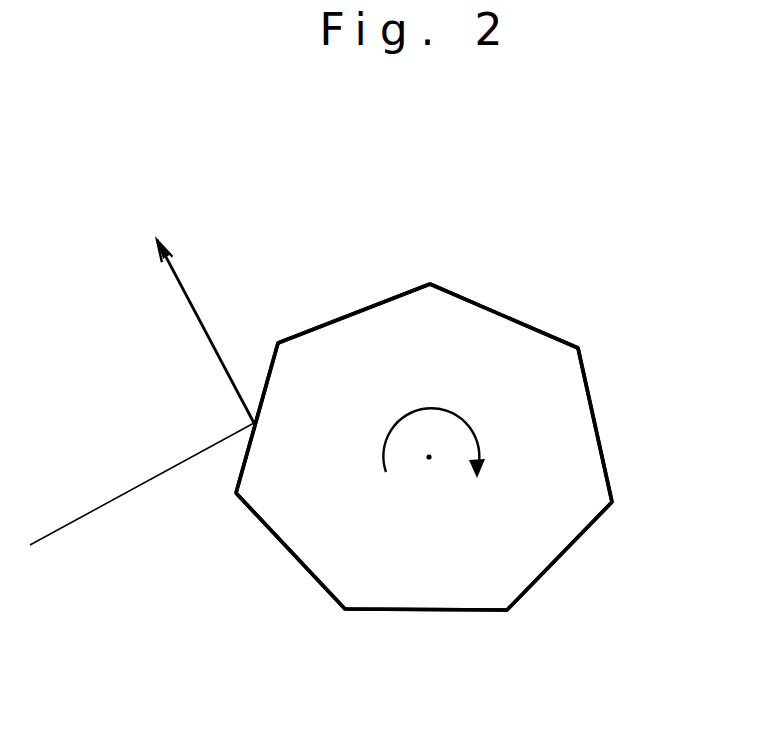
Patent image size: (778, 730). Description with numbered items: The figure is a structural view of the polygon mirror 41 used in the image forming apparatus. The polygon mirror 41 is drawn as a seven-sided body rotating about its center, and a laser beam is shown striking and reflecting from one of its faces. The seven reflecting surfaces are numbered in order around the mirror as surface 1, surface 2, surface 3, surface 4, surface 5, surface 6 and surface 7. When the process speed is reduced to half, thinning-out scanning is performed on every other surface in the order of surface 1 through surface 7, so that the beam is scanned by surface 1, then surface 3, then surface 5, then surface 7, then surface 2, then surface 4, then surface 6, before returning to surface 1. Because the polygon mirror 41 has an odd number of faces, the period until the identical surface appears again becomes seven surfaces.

The first surface 1 is at (217, 416).
The second surface 2 is at (439, 663).
The third surface 3 is at (633, 429).
The fourth surface 4 is at (337, 302).
The fifth surface 5 is at (272, 598).
The sixth surface 6 is at (590, 602).
The seventh surface 7 is at (523, 308).
The polygon mirror 41 is at (532, 350).